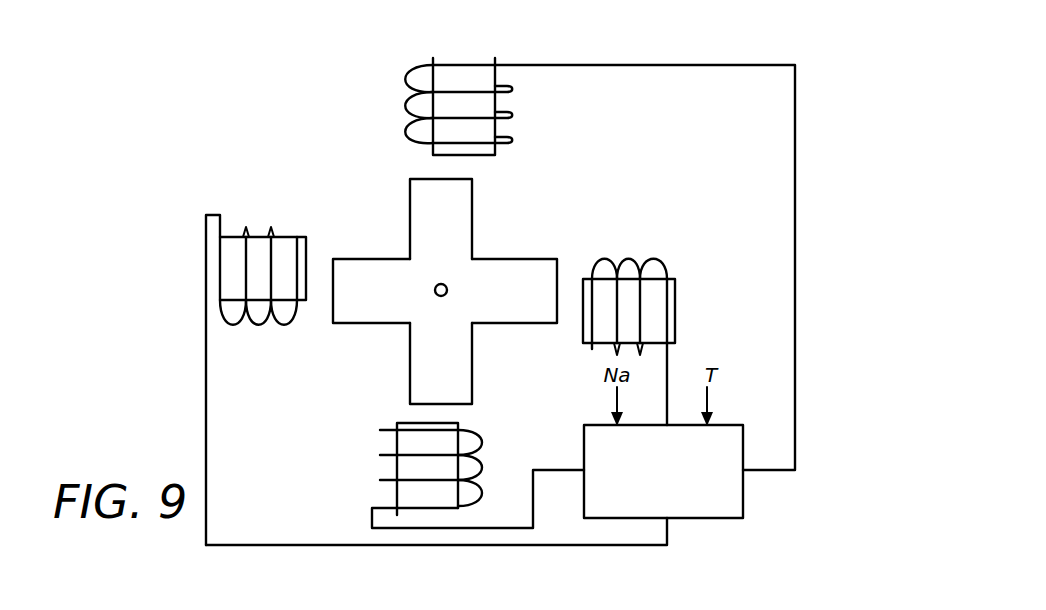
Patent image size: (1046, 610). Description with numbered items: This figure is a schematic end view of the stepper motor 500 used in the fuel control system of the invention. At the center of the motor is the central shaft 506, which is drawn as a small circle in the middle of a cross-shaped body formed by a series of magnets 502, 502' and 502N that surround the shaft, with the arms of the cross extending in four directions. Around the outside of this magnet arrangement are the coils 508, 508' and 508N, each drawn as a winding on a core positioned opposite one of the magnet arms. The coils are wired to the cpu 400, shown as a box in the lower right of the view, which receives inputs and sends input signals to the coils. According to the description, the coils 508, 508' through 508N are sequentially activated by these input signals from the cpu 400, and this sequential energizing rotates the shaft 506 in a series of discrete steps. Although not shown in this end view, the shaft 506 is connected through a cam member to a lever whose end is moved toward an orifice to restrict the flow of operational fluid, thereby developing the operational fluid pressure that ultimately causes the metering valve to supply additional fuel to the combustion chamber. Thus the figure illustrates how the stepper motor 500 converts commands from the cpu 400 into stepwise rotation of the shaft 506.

The cpu 400 is at (692, 512).
The stepper motor 500 is at (188, 349).
The magnet 502 is at (397, 193).
The magnet 502' is at (553, 248).
The magnet 502N is at (347, 317).
The central shaft 506 is at (436, 285).
The coil 508 is at (485, 92).
The coil 508' is at (677, 287).
The coil 508N is at (227, 255).